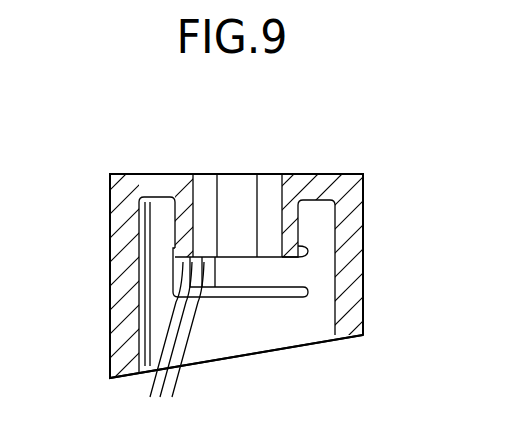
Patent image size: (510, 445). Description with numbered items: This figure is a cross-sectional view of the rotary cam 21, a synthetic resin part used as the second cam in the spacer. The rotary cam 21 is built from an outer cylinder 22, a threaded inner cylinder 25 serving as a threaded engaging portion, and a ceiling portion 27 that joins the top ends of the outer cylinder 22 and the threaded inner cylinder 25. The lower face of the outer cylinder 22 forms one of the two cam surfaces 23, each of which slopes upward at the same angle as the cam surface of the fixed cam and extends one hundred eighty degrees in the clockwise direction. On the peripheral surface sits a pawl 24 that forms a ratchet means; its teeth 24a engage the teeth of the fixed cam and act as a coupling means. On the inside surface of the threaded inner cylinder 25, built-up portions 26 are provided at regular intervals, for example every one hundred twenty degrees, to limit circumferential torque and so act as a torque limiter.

The rotary cam 21 is at (373, 223).
The outer cylinder 22 is at (117, 282).
The cam surface 23 is at (223, 362).
The pawl 24 is at (258, 280).
The teeth 24a is at (165, 351).
The threaded inner cylinder 25 is at (184, 238).
The built-up portions 26 is at (272, 188).
The ceiling portion 27 is at (322, 181).